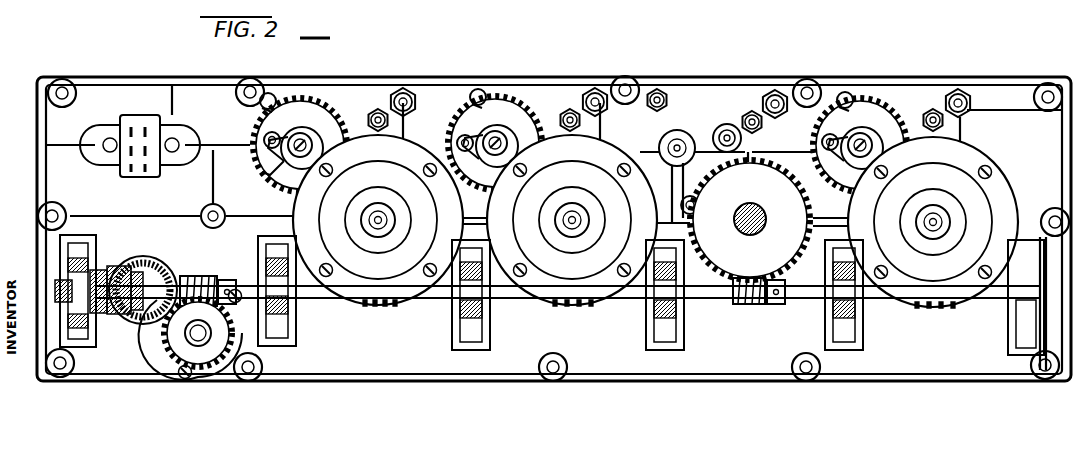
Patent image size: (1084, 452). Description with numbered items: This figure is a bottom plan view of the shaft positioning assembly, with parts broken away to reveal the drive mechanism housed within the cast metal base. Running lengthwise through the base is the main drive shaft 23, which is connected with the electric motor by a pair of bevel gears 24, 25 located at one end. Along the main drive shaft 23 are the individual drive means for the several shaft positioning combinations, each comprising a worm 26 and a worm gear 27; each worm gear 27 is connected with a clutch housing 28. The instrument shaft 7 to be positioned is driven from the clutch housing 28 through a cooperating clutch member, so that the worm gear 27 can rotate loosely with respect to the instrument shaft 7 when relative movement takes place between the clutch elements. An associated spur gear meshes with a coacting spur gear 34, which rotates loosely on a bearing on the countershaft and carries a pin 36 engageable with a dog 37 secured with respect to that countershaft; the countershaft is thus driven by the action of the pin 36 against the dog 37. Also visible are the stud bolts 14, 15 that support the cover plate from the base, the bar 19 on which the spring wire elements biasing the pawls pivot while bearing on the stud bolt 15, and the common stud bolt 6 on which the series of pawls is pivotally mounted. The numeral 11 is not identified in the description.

The stud bolt 6 is at (718, 130).
The instrument shaft 7 is at (742, 210).
The hub screw 11 is at (302, 144).
The stud bolt 14 is at (269, 94).
The stud bolt 15 is at (405, 88).
The bar 19 is at (750, 110).
The main drive shaft 23 is at (440, 299).
The bevel gear 24 is at (140, 262).
The bevel gear 25 is at (170, 320).
The worm 26 is at (388, 306).
The worm gear 27 is at (750, 220).
The clutch housing 28 is at (345, 293).
The spur gear 34 is at (257, 118).
The pin 36 is at (263, 140).
The dog 37 is at (270, 174).